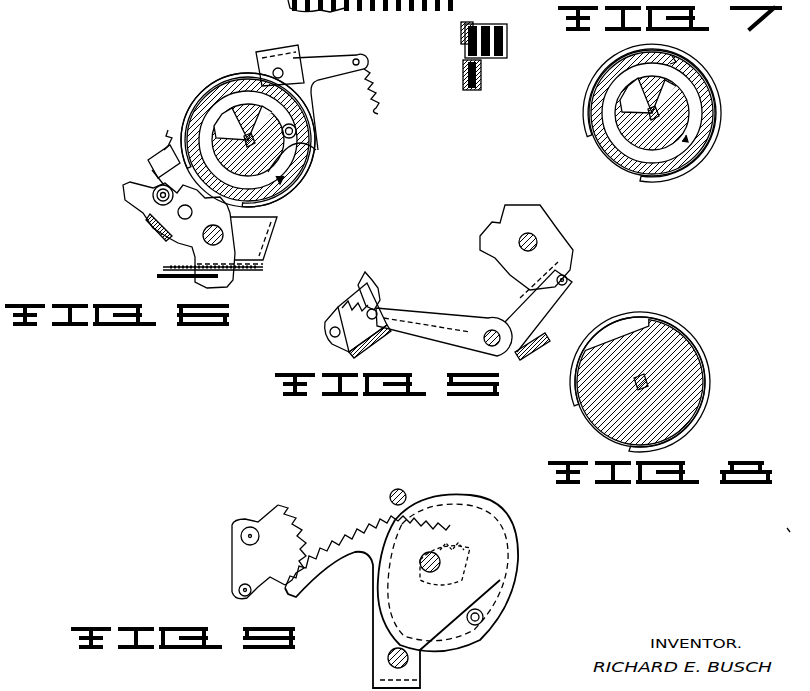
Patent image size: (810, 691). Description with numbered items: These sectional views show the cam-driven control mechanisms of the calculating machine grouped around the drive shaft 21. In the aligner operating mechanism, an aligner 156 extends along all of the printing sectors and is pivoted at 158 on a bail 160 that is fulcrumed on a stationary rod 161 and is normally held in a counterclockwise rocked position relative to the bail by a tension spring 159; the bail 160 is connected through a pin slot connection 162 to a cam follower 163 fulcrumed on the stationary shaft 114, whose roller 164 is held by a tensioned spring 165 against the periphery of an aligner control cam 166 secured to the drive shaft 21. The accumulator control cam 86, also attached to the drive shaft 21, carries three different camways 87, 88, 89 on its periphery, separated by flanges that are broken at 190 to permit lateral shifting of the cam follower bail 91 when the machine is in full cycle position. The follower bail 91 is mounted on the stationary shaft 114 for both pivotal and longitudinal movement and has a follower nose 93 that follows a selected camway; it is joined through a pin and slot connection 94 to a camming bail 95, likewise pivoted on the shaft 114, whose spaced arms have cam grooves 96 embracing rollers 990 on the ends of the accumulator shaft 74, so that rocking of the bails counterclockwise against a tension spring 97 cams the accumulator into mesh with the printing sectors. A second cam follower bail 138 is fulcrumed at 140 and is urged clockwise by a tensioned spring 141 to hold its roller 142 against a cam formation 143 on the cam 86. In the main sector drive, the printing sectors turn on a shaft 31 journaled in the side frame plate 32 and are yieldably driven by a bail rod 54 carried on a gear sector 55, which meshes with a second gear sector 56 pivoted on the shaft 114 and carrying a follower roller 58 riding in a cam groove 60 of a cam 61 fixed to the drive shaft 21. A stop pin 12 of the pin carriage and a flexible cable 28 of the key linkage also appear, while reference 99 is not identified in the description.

In FIG. 6, the stop pin 12 is at (505, 48).
In FIG. 6, the drive shaft 21 is at (246, 120).
In FIG. 7, the drive shaft 21 is at (650, 100).
In FIG. 5, the drive shaft 21 is at (540, 222).
In FIG. 8, the drive shaft 21 is at (645, 390).
In FIG. 9, the drive shaft 21 is at (440, 568).
In FIG. 6, the flexible cable 28 is at (480, 86).
In FIG. 9, the shaft 31 is at (248, 524).
In FIG. 6, the side frame plate 32 is at (468, 24).
In FIG. 9, the bail rod 54 is at (239, 592).
In FIG. 9, the gear sector 55 is at (282, 514).
In FIG. 9, the second gear sector 56 is at (352, 522).
In FIG. 9, the follower roller 58 is at (482, 625).
In FIG. 9, the cam groove 60 is at (518, 562).
In FIG. 9, the cam 61 is at (510, 530).
In FIG. 6, the accumulator shaft 74 is at (132, 186).
In FIG. 6, the accumulator control cam 86 is at (179, 82).
In FIG. 7, the accumulator control cam 86 is at (578, 100).
In FIG. 8, the accumulator control cam 86 is at (654, 302).
In FIG. 7, the camway 87 is at (722, 98).
In FIG. 6, the camway 88 is at (300, 172).
In FIG. 8, the camway 89 is at (712, 380).
In FIG. 6, the cam follower bail 91 is at (203, 250).
In FIG. 6, the follower nose 93 is at (160, 232).
In FIG. 6, the pin and slot connection 94 is at (178, 212).
In FIG. 6, the camming bail 95 is at (268, 250).
In FIG. 6, the cam groove 96 is at (158, 192).
In FIG. 6, the tension spring 97 is at (168, 130).
In FIG. 6, the bar 99 is at (165, 278).
In FIG. 6, the stationary shaft 114 is at (222, 262).
In FIG. 5, the stationary shaft 114 is at (472, 348).
In FIG. 9, the stationary shaft 114 is at (386, 654).
In FIG. 6, the cam follower bail 138 is at (308, 57).
In FIG. 6, the fulcrum 140 is at (279, 58).
In FIG. 6, the tensioned spring 141 is at (384, 92).
In FIG. 6, the roller 142 is at (297, 131).
In FIG. 6, the cam formation 143 is at (316, 150).
In FIG. 7, the cam formation 143 is at (676, 84).
In FIG. 5, the aligner 156 is at (380, 286).
In FIG. 5, the pivot 158 is at (355, 298).
In FIG. 5, the tension spring 159 is at (376, 340).
In FIG. 5, the bail 160 is at (336, 346).
In FIG. 5, the stationary rod 161 is at (330, 330).
In FIG. 5, the pin slot connection 162 is at (392, 303).
In FIG. 5, the cam follower 163 is at (458, 310).
In FIG. 5, the roller 164 is at (574, 275).
In FIG. 5, the tensioned spring 165 is at (536, 338).
In FIG. 5, the aligner control cam 166 is at (575, 242).
In FIG. 6, the flange break 190 is at (276, 204).
In FIG. 7, the flange break 190 is at (618, 172).
In FIG. 6, the roller 990 is at (158, 178).